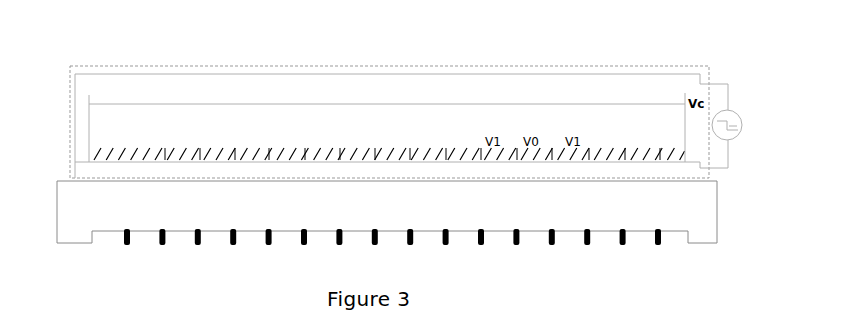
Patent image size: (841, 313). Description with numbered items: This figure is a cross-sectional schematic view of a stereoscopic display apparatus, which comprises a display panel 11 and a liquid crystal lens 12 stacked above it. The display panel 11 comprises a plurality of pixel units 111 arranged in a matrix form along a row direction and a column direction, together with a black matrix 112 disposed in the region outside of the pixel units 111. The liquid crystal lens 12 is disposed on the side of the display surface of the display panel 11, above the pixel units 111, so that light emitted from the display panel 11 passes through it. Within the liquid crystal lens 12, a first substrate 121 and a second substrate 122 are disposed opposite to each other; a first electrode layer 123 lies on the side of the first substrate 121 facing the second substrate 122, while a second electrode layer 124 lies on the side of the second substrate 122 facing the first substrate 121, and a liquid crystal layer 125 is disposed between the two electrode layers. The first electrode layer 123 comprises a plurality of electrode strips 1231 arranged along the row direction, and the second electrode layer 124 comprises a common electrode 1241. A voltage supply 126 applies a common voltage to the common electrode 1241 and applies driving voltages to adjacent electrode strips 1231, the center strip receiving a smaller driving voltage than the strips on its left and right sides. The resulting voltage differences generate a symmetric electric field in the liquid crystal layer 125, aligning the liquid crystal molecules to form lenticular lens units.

The display panel 11 is at (152, 200).
The pixel units 111 is at (220, 203).
The black matrix 112 is at (594, 232).
The liquid crystal lens 12 is at (116, 66).
The first substrate 121 is at (256, 172).
The second substrate 122 is at (337, 83).
The first electrode layer 123 is at (78, 153).
The electrode strips 1231 is at (428, 155).
The second electrode layer 124 is at (78, 99).
The common electrode 1241 is at (521, 100).
The liquid crystal layer 125 is at (627, 122).
The voltage supply 126 is at (721, 108).